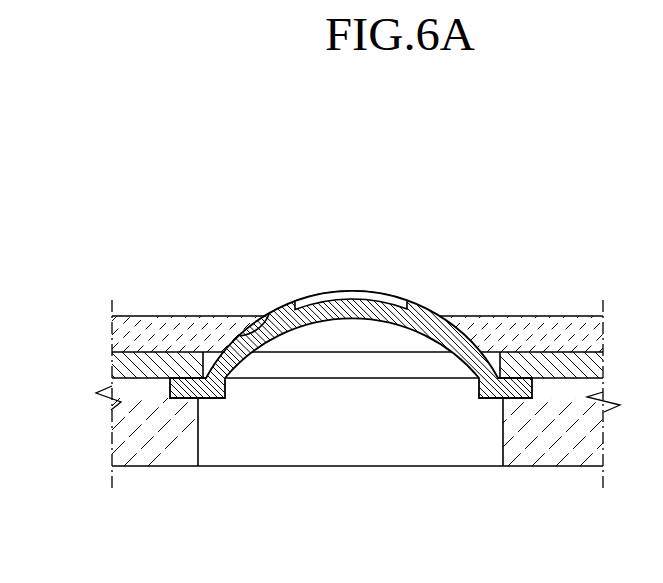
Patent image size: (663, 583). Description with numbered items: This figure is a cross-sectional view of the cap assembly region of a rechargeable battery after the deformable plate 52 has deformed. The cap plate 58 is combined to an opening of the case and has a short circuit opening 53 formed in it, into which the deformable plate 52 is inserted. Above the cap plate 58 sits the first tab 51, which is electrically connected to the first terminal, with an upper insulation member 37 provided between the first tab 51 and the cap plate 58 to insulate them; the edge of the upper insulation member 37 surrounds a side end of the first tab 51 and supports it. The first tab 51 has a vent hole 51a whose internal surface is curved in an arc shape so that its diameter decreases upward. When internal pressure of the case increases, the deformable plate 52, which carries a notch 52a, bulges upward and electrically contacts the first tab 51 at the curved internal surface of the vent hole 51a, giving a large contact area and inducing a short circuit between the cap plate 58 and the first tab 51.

The upper insulation member 37 is at (112, 368).
The first tab 51 is at (158, 332).
The vent hole 51a is at (269, 313).
The deformable plate 52 is at (424, 306).
The notch 52a is at (352, 292).
The short circuit opening 53 is at (388, 438).
The cap plate 58 is at (176, 455).